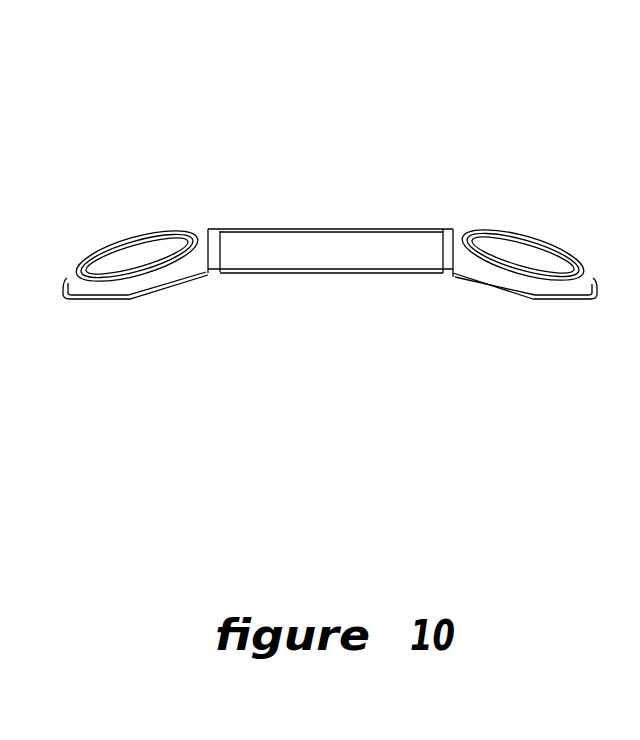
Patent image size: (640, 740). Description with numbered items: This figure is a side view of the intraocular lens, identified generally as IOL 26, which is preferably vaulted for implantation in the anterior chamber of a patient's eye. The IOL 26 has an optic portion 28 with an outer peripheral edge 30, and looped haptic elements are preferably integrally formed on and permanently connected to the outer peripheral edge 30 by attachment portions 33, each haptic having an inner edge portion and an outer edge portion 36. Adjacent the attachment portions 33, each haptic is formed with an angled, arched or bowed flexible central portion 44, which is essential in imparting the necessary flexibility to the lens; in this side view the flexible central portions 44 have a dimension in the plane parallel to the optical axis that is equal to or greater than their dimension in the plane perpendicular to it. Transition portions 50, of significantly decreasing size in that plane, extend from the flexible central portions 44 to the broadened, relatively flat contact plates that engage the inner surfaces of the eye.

The IOL 26 is at (465, 214).
The optic portion 28 is at (333, 228).
The outer peripheral edge 30 is at (322, 245).
The attachment portion 33 is at (441, 277).
The outer edge portion 36 is at (110, 290).
The flexible central portion 44 is at (478, 288).
The transition portion 50 is at (553, 295).